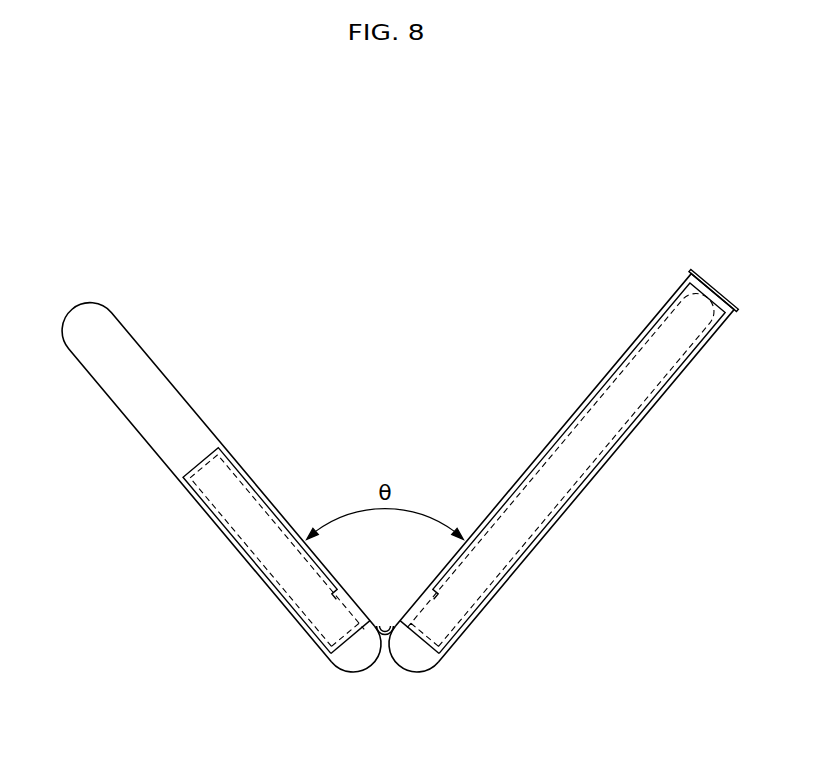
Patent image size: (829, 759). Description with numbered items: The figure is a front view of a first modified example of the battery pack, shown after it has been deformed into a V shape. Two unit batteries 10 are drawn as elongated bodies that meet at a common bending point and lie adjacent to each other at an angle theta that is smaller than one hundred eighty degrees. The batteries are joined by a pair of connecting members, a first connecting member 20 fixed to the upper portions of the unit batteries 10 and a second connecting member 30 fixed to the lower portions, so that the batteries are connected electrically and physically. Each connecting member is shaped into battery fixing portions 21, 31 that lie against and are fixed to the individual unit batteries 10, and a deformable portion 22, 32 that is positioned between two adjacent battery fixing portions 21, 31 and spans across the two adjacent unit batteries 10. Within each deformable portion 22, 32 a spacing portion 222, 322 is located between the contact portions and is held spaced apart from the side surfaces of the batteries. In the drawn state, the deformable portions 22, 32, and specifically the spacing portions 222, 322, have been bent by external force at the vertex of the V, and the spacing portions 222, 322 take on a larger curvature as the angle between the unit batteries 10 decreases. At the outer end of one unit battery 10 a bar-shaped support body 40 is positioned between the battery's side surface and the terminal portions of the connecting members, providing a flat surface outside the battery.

The unit battery 10 is at (136, 324).
The first connecting member 20 is at (390, 468).
The second connecting member 30 is at (390, 468).
The battery fixing portion 21 is at (390, 468).
The battery fixing portion 31 is at (184, 458).
The deformable portion 22 is at (391, 585).
The deformable portion 32 is at (377, 609).
The spacing portion 222 is at (385, 677).
The spacing portion 322 is at (385, 636).
The support body 40 is at (697, 276).